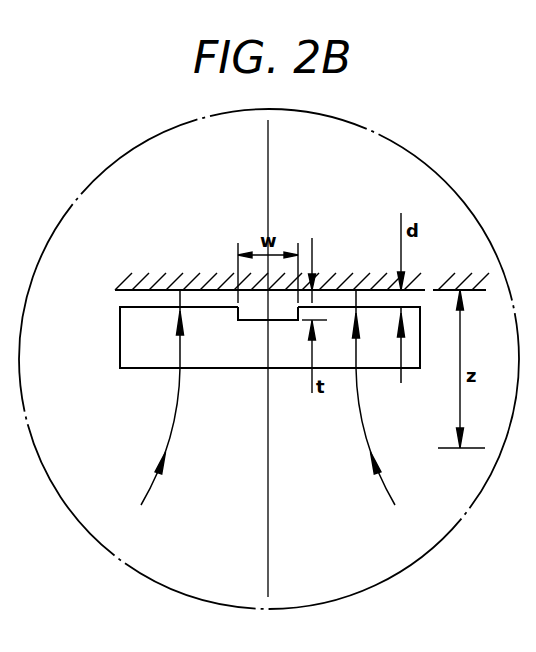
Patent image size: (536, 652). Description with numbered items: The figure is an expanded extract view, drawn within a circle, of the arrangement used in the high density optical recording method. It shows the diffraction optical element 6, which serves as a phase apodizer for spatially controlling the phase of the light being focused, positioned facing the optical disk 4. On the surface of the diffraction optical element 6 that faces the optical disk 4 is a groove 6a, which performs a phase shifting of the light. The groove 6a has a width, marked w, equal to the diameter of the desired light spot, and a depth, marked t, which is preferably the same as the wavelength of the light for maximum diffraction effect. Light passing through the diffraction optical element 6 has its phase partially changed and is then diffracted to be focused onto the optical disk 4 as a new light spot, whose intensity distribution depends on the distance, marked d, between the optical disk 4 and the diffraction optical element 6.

The optical disk 4 is at (116, 291).
The diffraction optical element 6 is at (112, 356).
The groove 6a is at (261, 321).